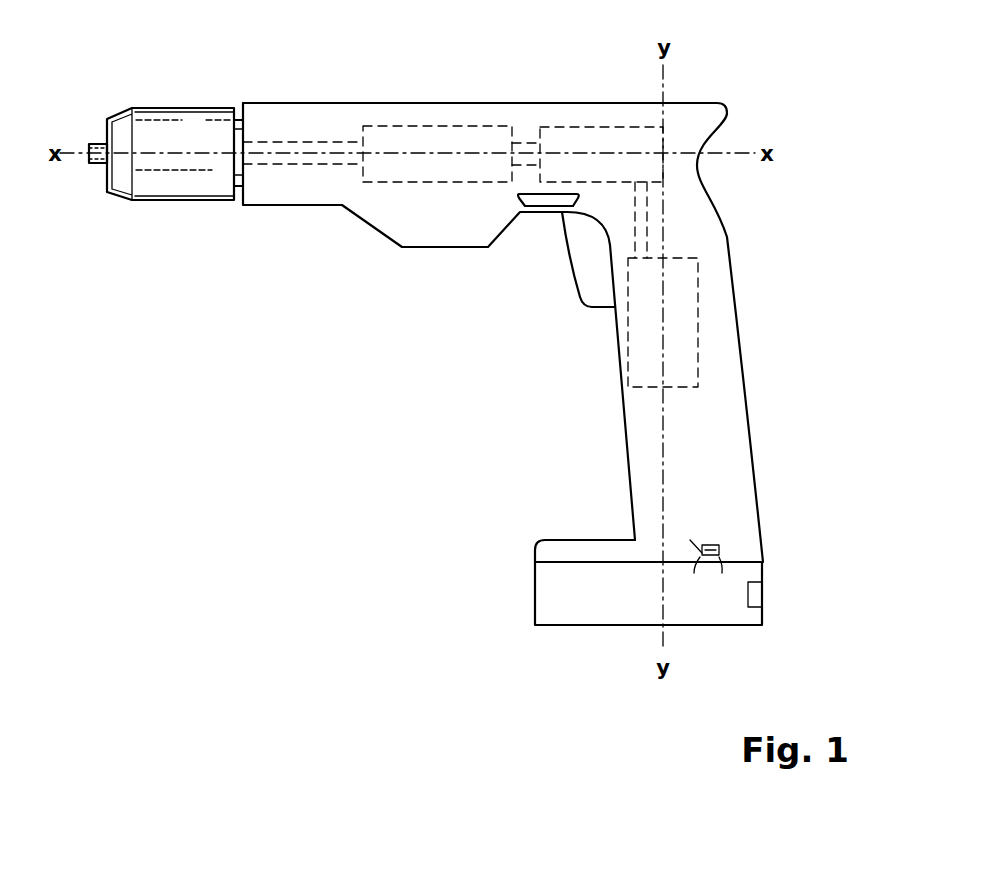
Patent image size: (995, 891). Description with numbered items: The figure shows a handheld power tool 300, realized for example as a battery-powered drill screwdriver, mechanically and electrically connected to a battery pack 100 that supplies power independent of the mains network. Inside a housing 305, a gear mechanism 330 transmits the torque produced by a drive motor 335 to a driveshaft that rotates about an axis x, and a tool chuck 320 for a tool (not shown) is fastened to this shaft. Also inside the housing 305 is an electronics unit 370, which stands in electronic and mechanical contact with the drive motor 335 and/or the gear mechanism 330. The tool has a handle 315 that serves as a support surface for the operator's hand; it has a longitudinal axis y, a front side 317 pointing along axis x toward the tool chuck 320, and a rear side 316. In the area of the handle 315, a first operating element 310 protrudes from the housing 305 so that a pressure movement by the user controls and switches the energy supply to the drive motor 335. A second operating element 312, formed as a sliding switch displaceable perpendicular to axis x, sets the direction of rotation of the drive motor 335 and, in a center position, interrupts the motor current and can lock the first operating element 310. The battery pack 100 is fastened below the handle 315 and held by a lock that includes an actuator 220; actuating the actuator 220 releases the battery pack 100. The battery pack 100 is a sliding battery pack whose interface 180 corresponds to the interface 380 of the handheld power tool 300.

The handheld power tool 300 is at (712, 72).
The tool chuck 320 is at (97, 142).
The gear mechanism 330 is at (375, 138).
The housing 305 is at (432, 122).
The drive motor 335 is at (592, 140).
The second operating element 312 is at (545, 200).
The first operating element 310 is at (590, 297).
The handle 315 is at (717, 297).
The rear side 316 is at (745, 370).
The front side 317 is at (620, 390).
The electronics unit 370 is at (687, 352).
The interface 380 is at (722, 548).
The interface 180 is at (735, 545).
The battery pack 100 is at (590, 608).
The actuator 220 is at (750, 606).